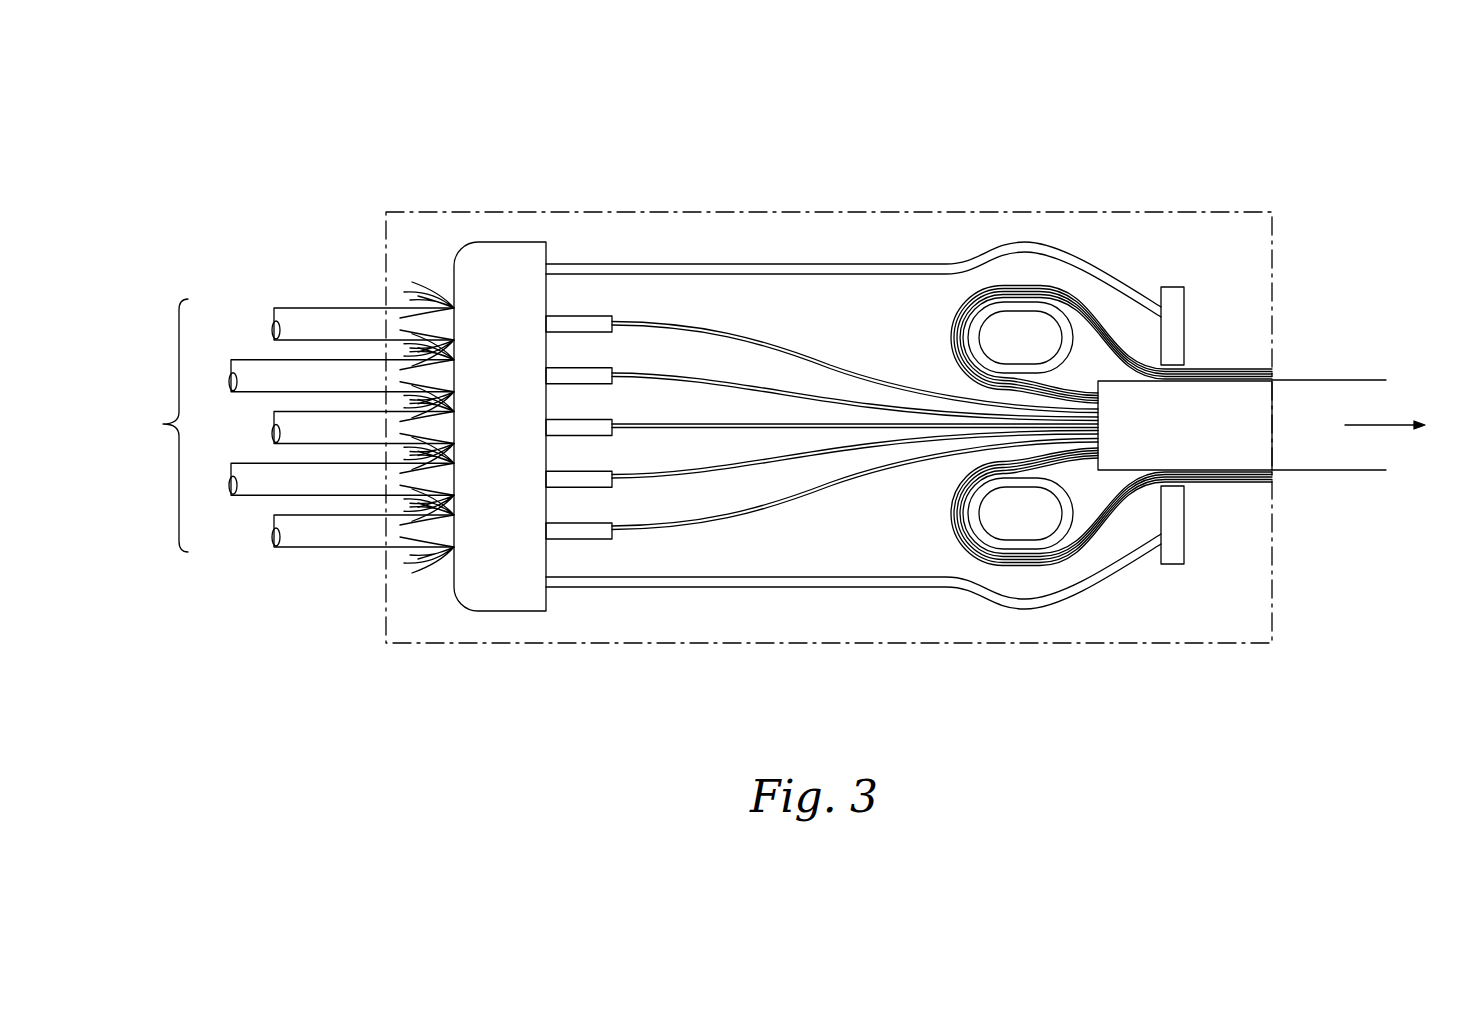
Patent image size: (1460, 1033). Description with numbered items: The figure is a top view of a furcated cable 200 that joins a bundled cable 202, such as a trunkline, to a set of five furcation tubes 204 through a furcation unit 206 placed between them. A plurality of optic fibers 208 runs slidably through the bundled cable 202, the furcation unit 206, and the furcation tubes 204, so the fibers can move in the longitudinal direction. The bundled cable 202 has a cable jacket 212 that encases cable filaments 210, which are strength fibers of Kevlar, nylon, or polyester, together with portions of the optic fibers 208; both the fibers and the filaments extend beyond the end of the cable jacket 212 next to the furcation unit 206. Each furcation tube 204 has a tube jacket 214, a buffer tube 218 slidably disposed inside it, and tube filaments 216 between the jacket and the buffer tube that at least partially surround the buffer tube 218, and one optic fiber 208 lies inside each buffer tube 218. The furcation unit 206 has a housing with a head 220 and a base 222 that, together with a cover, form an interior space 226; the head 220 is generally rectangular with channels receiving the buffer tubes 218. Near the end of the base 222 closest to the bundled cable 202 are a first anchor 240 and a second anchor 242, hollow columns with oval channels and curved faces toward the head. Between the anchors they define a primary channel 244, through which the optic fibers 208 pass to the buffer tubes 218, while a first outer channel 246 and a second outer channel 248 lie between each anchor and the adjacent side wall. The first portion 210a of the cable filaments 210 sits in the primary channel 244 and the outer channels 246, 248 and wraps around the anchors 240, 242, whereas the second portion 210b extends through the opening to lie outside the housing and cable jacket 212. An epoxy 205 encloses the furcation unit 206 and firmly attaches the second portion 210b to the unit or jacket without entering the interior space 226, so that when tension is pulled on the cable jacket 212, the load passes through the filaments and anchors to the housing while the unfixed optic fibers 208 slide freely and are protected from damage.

The furcated cable 200 is at (776, 371).
The bundled cable 202 is at (1270, 392).
The furcation tubes 204 is at (172, 406).
The epoxy 205 is at (1272, 577).
The furcation unit 206 is at (853, 233).
The optic fibers 208 is at (834, 483).
The cable filaments 210 is at (1208, 370).
The first portion of the cable filaments 210a is at (1095, 495).
The second portion of the cable filaments 210b is at (1233, 470).
The cable jacket 212 is at (1350, 472).
The tube jacket 214 is at (303, 308).
The tube filaments 216 is at (413, 342).
The buffer tube 218 is at (607, 416).
The head 220 is at (532, 472).
The base 222 is at (853, 613).
The interior space 226 is at (669, 230).
The first anchor 240 is at (1050, 538).
The second anchor 242 is at (1053, 302).
The primary channel 244 is at (916, 511).
The first outer channel 246 is at (994, 633).
The second outer channel 248 is at (980, 269).